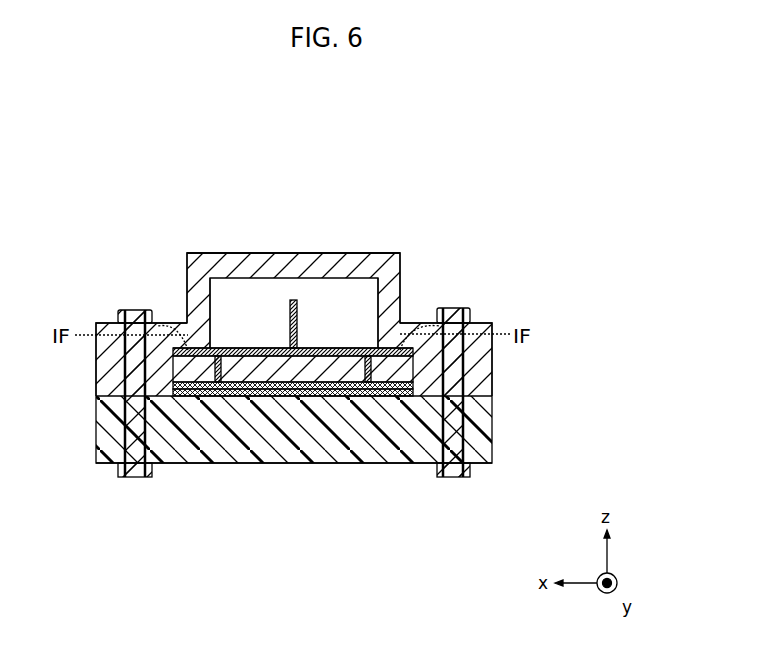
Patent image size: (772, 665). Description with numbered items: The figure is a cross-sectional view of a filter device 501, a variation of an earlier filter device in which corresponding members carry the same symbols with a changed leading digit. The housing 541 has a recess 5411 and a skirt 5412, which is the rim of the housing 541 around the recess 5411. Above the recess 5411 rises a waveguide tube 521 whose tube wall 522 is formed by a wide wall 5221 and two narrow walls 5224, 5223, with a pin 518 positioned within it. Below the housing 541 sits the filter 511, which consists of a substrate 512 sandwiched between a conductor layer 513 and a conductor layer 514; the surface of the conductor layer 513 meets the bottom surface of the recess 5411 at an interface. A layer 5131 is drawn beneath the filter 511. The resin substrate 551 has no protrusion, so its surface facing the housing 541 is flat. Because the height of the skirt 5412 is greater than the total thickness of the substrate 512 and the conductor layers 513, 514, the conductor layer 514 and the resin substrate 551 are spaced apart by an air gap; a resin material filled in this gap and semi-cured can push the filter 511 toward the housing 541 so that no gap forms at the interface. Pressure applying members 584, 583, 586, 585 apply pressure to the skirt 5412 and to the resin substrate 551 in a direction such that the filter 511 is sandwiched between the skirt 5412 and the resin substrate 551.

The filter device 501 is at (492, 152).
The housing 541 is at (297, 292).
The recess 5411 is at (492, 363).
The skirt 5412 is at (96, 368).
The resin substrate 551 is at (310, 455).
The tube wall 522 is at (293, 260).
The waveguide tube 521 is at (293, 260).
The wide wall 5221 is at (327, 252).
The narrow wall 5224 is at (211, 302).
The narrow wall 5223 is at (377, 302).
The pin 518 is at (298, 322).
The filter 511 is at (367, 343).
The conductor layer 513 is at (225, 348).
The substrate 512 is at (238, 370).
The bonding layer 5131 is at (300, 396).
The conductor layer 514 is at (228, 393).
The pressure applying member 584 is at (120, 310).
The pressure applying member 583 is at (120, 476).
The pressure applying member 586 is at (468, 308).
The pressure applying member 585 is at (468, 477).